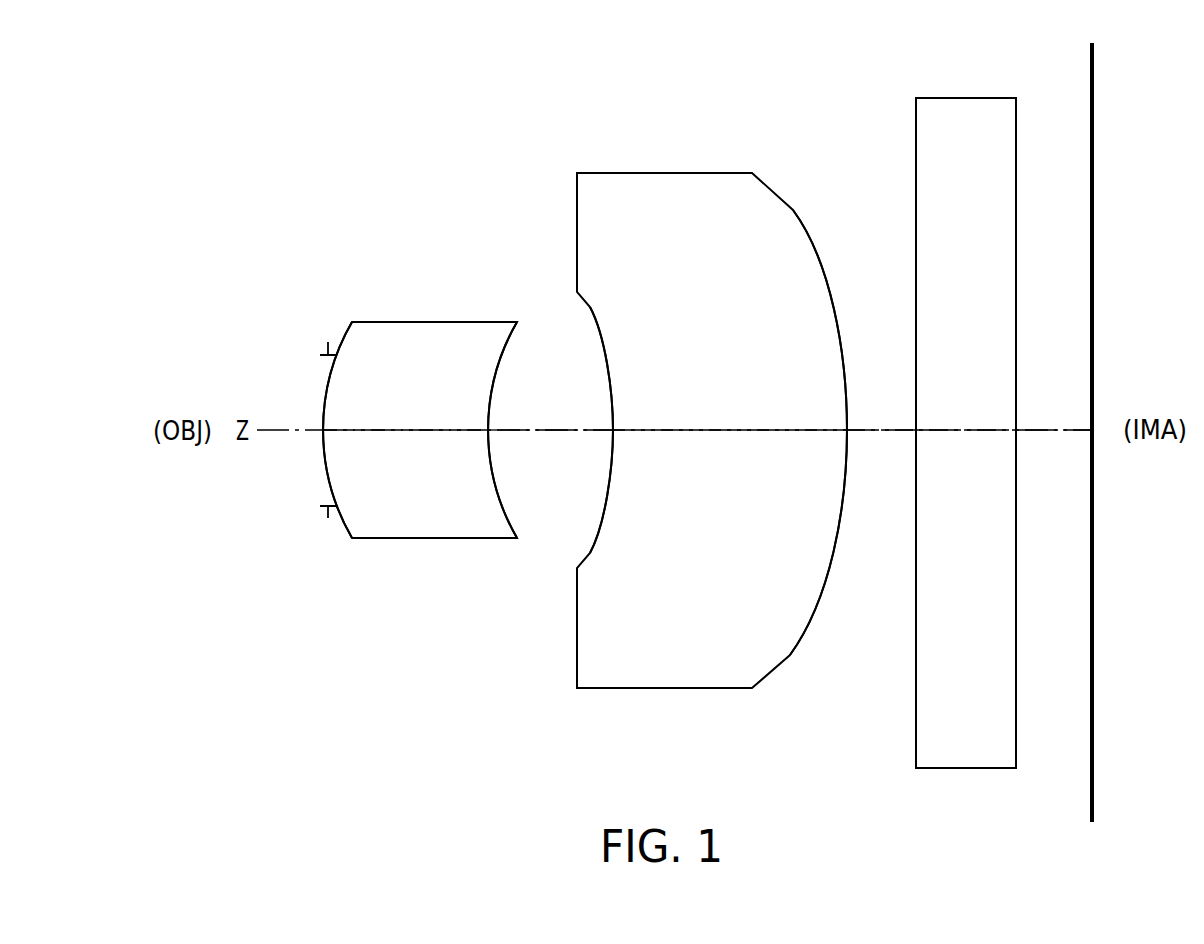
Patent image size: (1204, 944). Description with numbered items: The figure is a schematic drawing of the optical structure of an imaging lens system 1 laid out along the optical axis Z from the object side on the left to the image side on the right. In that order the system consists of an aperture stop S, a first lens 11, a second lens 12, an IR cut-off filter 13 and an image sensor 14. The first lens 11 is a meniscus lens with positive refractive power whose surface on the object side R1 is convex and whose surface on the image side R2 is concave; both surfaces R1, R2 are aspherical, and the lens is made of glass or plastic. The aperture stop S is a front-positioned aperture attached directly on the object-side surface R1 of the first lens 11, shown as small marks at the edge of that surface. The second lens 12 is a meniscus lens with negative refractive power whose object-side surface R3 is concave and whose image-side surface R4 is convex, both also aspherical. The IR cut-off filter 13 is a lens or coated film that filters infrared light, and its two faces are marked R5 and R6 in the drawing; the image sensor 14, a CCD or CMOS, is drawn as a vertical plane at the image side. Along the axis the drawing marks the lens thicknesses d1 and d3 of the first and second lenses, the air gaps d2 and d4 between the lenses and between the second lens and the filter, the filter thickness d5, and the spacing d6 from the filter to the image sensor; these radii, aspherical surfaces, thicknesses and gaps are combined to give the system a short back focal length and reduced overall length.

The imaging lens system 1 is at (260, 121).
The first lens 11 is at (423, 541).
The second lens 12 is at (668, 690).
The IR cut-off filter 13 is at (968, 769).
The image sensor 14 is at (1094, 197).
The aperture stop S is at (326, 508).
The surface on the object side of the first lens R1 is at (347, 330).
The surface on the image side of the first lens R2 is at (500, 363).
The surface on the object side of the second lens R3 is at (607, 505).
The surface on the image side of the second lens R4 is at (830, 575).
The object-side surface of filter R5 is at (915, 172).
The image-side surface of filter R6 is at (1017, 138).
The lens thickness d1 is at (413, 428).
The air gap d2 is at (544, 428).
The lens thickness d3 is at (734, 428).
The air gap d4 is at (875, 428).
The thickness of filter d5 is at (969, 428).
The air gap d6 is at (1059, 428).